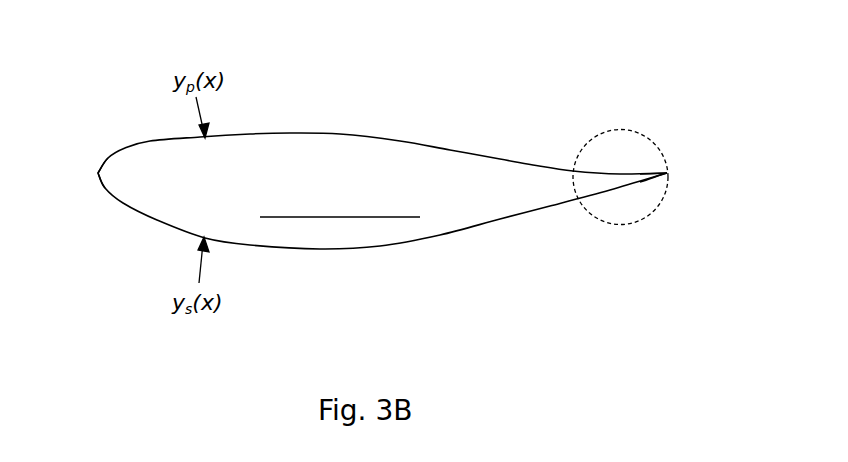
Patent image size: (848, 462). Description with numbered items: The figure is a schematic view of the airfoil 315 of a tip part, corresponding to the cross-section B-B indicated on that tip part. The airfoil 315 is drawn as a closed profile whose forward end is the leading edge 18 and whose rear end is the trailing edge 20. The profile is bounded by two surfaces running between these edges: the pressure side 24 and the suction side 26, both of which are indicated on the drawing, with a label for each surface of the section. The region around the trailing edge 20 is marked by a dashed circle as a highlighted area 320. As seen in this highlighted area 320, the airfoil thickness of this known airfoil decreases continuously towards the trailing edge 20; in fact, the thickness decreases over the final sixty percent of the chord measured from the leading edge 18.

The airfoil 315 is at (135, 33).
The leading edge 18 is at (97, 173).
The trailing edge 20 is at (668, 172).
The pressure side 24 is at (533, 165).
The suction side 26 is at (552, 207).
The highlighted area 320 is at (613, 130).